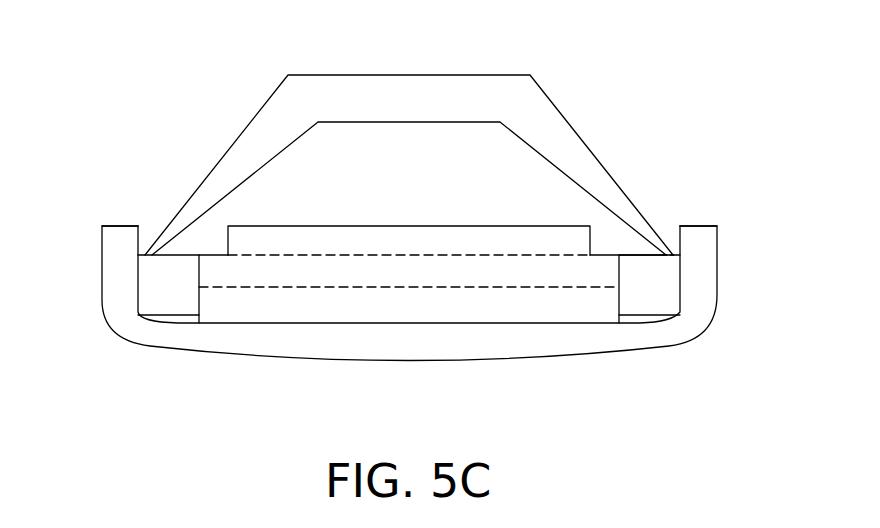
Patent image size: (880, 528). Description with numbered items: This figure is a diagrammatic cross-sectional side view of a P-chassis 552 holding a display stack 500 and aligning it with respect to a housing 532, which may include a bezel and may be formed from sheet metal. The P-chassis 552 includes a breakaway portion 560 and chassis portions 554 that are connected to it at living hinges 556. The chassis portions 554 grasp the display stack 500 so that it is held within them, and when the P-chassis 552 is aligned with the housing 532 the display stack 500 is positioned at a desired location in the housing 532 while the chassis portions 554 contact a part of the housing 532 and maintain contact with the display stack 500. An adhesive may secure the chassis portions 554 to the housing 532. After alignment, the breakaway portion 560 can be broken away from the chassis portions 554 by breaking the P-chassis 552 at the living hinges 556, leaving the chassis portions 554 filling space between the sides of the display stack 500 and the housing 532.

The display stack 500 is at (380, 225).
The housing 532 is at (678, 348).
The P-chassis 552 is at (245, 127).
The chassis portions 554 is at (158, 285).
The living hinges 556 is at (145, 252).
The breakaway portion 560 is at (556, 107).